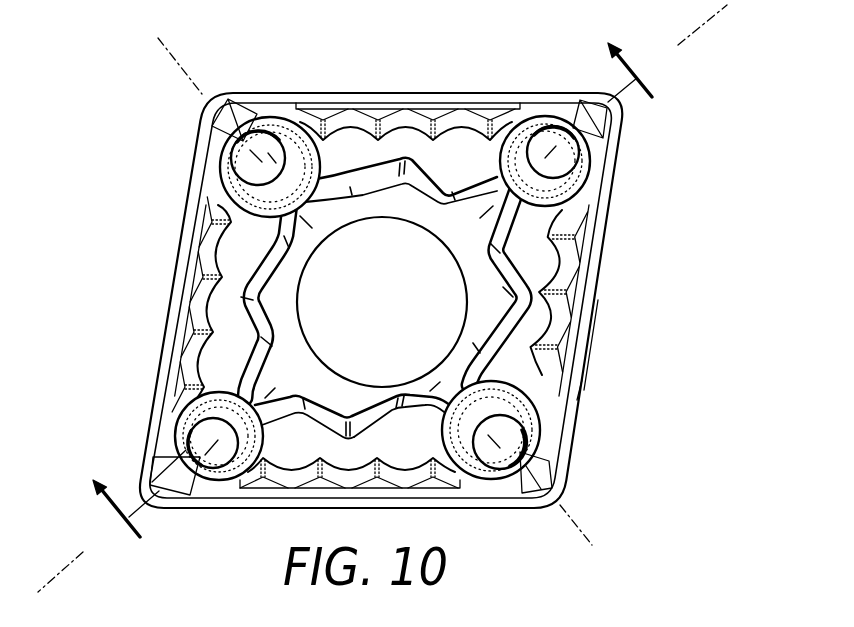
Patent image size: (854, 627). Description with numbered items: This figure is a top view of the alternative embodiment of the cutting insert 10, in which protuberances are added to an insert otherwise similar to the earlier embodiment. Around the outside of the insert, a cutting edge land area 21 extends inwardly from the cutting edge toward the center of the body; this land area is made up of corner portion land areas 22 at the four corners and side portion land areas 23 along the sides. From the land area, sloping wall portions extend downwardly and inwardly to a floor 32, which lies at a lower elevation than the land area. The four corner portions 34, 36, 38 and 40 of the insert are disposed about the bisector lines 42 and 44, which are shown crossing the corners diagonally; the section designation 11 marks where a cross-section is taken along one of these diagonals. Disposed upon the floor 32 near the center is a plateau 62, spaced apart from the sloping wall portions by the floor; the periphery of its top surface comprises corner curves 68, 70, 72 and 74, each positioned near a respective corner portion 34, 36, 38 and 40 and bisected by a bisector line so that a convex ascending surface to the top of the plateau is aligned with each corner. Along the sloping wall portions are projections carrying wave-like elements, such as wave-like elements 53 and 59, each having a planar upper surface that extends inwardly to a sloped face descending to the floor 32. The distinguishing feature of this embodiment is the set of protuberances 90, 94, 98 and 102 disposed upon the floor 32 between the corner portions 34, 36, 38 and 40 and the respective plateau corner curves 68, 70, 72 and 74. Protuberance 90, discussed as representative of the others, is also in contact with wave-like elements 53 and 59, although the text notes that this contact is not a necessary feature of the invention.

The insert 10 is at (118, 342).
The section line 11- 11 is at (356, 317).
The cutting edge land area 21 is at (590, 341).
The corner portion land area 22 is at (528, 507).
The side portion land area 23 is at (575, 384).
The floor 32 is at (440, 158).
The corner portion 34 is at (633, 118).
The corner portion 36 is at (590, 468).
The corner portion 38 is at (168, 524).
The corner portion 40 is at (190, 106).
The bisector line 42 is at (730, 8).
The bisector line 44 is at (588, 534).
The wave-like element 53 is at (582, 262).
The wave-like element 59 is at (372, 122).
The plateau 62 is at (470, 240).
The corner curve 68 is at (514, 212).
The corner curve 70 is at (452, 433).
The corner curve 72 is at (258, 410).
The corner curve 74 is at (249, 216).
The protuberance 90 is at (543, 137).
The protuberance 94 is at (535, 428).
The protuberance 98 is at (185, 434).
The protuberance 102 is at (232, 157).